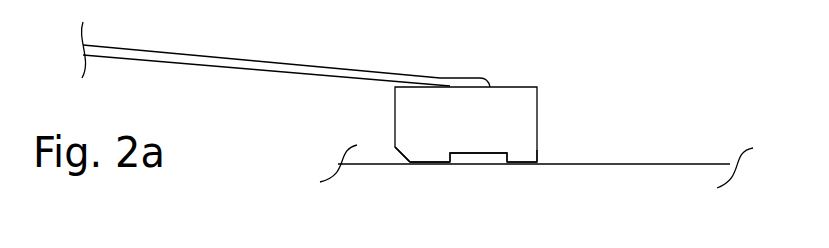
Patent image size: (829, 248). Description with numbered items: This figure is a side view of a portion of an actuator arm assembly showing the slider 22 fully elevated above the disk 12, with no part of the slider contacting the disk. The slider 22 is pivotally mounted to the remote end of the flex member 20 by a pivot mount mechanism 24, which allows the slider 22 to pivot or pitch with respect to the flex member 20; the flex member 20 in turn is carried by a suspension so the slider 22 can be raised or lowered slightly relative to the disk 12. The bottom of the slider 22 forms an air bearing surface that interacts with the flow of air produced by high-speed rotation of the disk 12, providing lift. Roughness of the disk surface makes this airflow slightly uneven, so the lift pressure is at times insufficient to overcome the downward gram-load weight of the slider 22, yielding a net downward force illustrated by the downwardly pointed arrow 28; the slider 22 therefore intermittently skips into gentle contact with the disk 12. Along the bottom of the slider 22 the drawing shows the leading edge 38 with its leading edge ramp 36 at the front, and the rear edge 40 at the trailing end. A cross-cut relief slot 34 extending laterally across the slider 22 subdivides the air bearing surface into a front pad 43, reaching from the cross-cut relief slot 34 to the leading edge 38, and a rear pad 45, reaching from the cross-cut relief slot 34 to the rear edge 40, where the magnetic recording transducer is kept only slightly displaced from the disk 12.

The disk 12 is at (633, 164).
The flex member 20 is at (360, 73).
The slider 22 is at (527, 103).
The pivot mount mechanism 24 is at (473, 78).
The downwardly pointed arrow 28 is at (465, 128).
The cross-cut relief slot 34 is at (475, 153).
The leading edge ramp 36 is at (402, 155).
The leading edge 38 is at (395, 147).
The rear edge 40 is at (537, 162).
The front pad 43 is at (432, 162).
The rear pad 45 is at (525, 162).